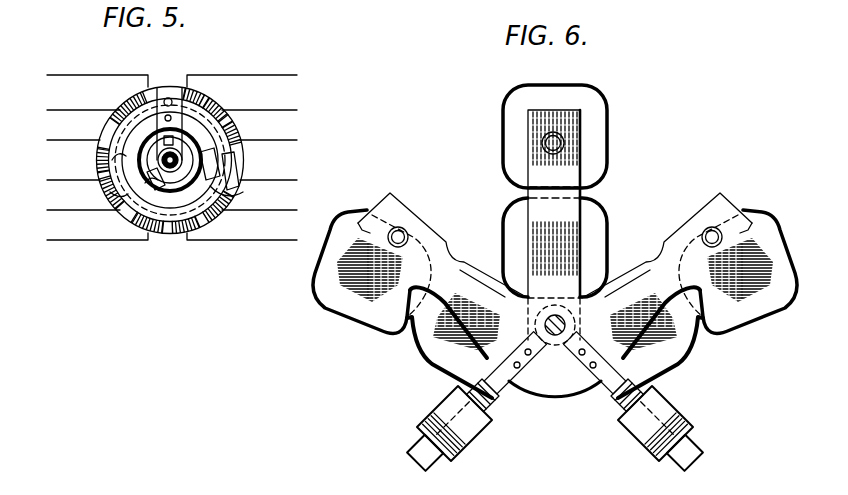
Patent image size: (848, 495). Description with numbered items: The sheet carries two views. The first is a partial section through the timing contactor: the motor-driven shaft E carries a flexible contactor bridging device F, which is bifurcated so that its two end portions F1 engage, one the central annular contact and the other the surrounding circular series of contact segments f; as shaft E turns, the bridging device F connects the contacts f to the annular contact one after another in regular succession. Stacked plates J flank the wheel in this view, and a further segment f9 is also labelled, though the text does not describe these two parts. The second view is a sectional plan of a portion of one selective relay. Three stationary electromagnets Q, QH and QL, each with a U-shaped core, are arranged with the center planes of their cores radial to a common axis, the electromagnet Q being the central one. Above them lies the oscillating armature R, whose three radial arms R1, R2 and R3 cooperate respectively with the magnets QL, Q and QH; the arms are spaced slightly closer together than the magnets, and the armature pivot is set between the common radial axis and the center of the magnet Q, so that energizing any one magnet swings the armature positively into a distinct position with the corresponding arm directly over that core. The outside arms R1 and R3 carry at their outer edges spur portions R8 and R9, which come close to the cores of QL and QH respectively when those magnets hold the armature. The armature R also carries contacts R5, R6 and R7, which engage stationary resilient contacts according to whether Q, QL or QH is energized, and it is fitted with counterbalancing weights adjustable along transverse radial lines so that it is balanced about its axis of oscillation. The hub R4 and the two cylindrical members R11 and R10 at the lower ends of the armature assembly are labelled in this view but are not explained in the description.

In FIG. 5, the laminated plates J is at (75, 78).
In FIG. 5, the flexible contactor bridging device F is at (157, 220).
In FIG. 5, the shaft E is at (180, 157).
In FIG. 5, the end portions of bridging device F1 is at (235, 160).
In FIG. 5, the contact segments f is at (110, 194).
In FIG. 5, the contact segment f9 is at (147, 185).
In FIG. 6, the central electromagnet Q is at (590, 215).
In FIG. 6, the armature arm R2 is at (528, 185).
In FIG. 6, the armature contact R6 is at (563, 142).
In FIG. 6, the spur portion R9 is at (348, 302).
In FIG. 6, the armature arm R3 is at (393, 203).
In FIG. 6, the armature contact R7 is at (405, 235).
In FIG. 6, the electromagnet QH is at (378, 322).
In FIG. 6, the armature arm R1 is at (700, 212).
In FIG. 6, the spur portion R8 is at (745, 285).
In FIG. 6, the armature contact R5 is at (735, 218).
In FIG. 6, the electromagnet QL is at (662, 345).
In FIG. 6, the oscillating armature R is at (568, 385).
In FIG. 6, the shaft R4 is at (556, 338).
In FIG. 6, the left cylinder R11 is at (468, 447).
In FIG. 6, the right cylinder R10 is at (632, 440).